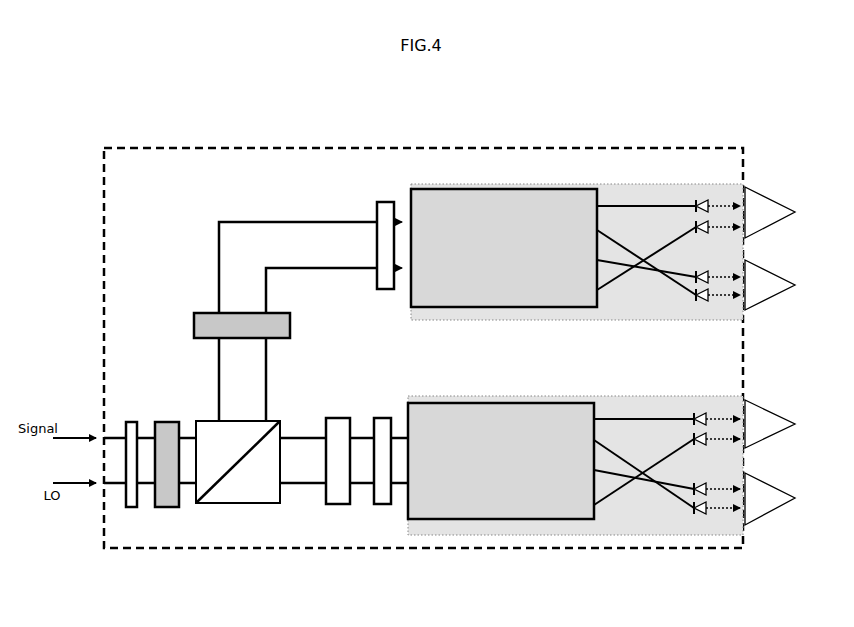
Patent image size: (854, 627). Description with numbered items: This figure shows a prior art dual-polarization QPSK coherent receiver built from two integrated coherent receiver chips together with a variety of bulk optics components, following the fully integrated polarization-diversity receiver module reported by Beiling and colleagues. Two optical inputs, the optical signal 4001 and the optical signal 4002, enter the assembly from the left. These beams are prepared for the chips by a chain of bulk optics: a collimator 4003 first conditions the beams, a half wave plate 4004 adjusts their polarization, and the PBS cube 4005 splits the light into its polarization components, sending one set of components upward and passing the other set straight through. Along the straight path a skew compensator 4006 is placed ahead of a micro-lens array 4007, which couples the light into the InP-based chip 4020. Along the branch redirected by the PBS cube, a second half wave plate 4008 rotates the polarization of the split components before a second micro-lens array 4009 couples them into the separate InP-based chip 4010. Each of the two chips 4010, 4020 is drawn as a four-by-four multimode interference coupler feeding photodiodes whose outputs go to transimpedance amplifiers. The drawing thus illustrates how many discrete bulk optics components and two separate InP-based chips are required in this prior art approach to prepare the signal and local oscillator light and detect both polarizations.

The optical signal 4001 is at (95, 432).
The optical signal 4002 is at (80, 490).
The collimator 4003 is at (130, 510).
The half wave plate 4004 is at (166, 510).
The PBS cube 4005 is at (261, 510).
The skew compensator 4006 is at (336, 508).
The micro-lens array 4007 is at (380, 508).
The half wave plate 4008 is at (235, 307).
The micro-lens array 4009 is at (393, 198).
The InP-based chip 4010 is at (628, 178).
The InP-based chip 4020 is at (650, 535).